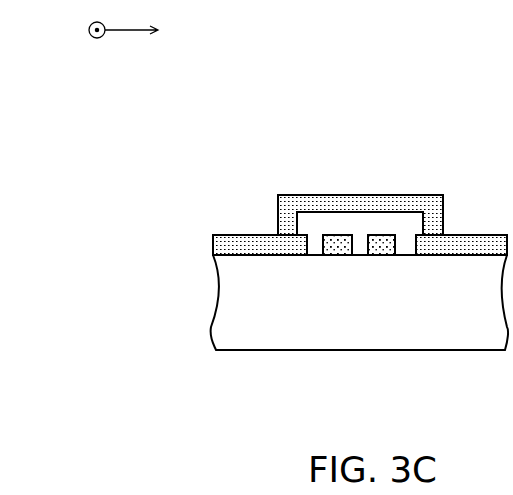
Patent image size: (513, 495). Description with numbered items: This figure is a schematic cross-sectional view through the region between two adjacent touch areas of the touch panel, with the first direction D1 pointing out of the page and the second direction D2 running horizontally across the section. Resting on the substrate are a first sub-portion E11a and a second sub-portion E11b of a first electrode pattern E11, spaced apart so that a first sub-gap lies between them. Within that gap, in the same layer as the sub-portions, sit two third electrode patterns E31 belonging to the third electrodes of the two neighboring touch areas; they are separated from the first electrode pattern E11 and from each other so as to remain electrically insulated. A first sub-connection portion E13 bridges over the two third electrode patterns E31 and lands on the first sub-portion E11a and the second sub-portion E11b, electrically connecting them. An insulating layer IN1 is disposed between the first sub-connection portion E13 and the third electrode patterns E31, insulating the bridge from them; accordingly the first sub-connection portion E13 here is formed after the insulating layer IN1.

The first electrode pattern E11 is at (360, 169).
The first sub-portion E11a is at (250, 245).
The second sub-portion E11b is at (477, 243).
The first sub-connection portion E13 is at (315, 208).
The third electrode pattern E31 is at (337, 245).
The insulating layer IN1 is at (406, 243).
The first direction D1 is at (84, 64).
The second direction D2 is at (216, 30).